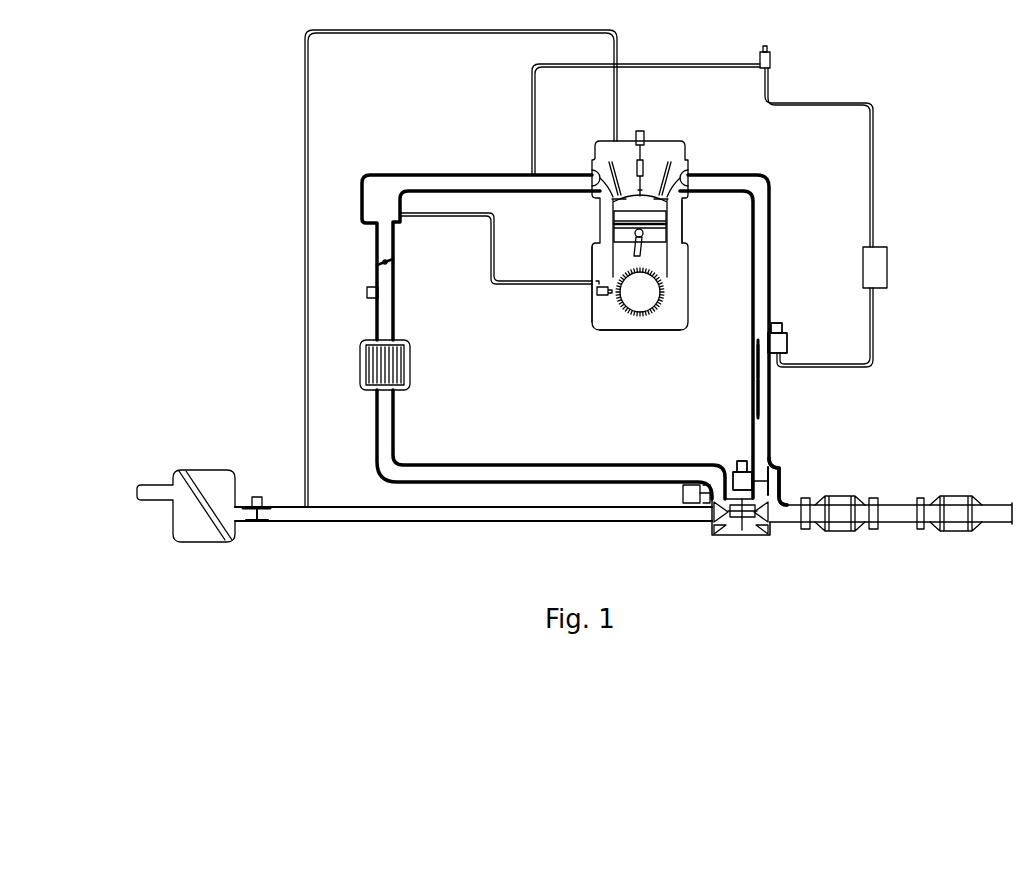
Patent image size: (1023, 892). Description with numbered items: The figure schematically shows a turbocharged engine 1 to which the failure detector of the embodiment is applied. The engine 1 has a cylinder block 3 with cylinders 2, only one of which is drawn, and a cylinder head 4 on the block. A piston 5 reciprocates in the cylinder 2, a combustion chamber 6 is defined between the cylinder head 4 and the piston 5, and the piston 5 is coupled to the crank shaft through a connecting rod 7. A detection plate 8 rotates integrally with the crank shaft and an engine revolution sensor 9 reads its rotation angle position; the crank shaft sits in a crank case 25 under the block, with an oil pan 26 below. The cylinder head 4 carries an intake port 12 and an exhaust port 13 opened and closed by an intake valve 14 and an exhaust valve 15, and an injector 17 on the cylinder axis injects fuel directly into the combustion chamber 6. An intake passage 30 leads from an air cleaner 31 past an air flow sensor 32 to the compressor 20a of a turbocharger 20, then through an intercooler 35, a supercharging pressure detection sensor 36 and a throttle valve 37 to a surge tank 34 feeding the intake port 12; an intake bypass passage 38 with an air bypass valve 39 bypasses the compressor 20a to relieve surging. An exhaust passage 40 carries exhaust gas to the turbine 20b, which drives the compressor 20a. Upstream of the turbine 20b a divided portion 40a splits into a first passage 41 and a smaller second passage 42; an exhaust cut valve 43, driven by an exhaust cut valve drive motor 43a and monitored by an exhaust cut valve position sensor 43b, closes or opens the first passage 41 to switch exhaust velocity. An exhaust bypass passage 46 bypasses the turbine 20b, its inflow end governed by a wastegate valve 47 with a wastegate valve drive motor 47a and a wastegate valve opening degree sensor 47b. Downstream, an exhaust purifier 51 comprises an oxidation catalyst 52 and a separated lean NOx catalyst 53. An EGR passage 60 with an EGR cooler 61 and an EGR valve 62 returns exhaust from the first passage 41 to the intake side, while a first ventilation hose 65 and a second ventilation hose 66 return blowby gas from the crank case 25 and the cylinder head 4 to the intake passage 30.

The turbocharged engine 1 is at (694, 131).
The cylinder 2 is at (670, 272).
The cylinder block 3 is at (683, 222).
The cylinder head 4 is at (686, 160).
The piston 5 is at (618, 214).
The combustion chamber 6 is at (646, 234).
The connecting rod 7 is at (634, 248).
The detection plate 8 is at (666, 290).
The engine revolution sensor 9 is at (598, 297).
The intake port 12 is at (590, 174).
The exhaust port 13 is at (690, 178).
The intake valve 14 is at (615, 161).
The exhaust valve 15 is at (664, 162).
The injector 17 is at (644, 188).
The turbocharger 20 is at (745, 551).
The compressor 20a is at (719, 536).
The turbine 20b is at (765, 536).
The crank case 25 is at (592, 274).
The oil pan 26 is at (610, 333).
The intake passage 30 is at (506, 466).
The air cleaner 31 is at (200, 477).
The air flow sensor 32 is at (258, 496).
The surge tank 34 is at (361, 197).
The intercooler 35 is at (412, 364).
The supercharging pressure detection sensor 36 is at (367, 292).
The throttle valve 37 is at (394, 268).
The intake bypass passage 38 is at (706, 486).
The air bypass valve 39 is at (688, 487).
The exhaust passage 40 is at (770, 250).
The divided portion 40a is at (703, 350).
The first passage 41 is at (756, 357).
The second passage 42 is at (756, 380).
The exhaust cut valve 43 is at (763, 340).
The exhaust cut valve drive motor 43a is at (788, 343).
The exhaust cut valve position sensor 43b is at (782, 328).
The exhaust bypass passage 46 is at (781, 496).
The wastegate valve 47 is at (772, 484).
The wastegate valve drive motor 47a is at (755, 476).
The wastegate valve opening degree sensor 47b is at (749, 462).
The exhaust purifier 51 is at (891, 550).
The oxidation catalyst 52 is at (840, 532).
The lean NOx catalyst 53 is at (952, 532).
The EGR passage 60 is at (875, 190).
The EGR cooler 61 is at (888, 268).
The EGR valve 62 is at (771, 62).
The first ventilation hose 65 is at (508, 286).
The second ventilation hose 66 is at (304, 229).